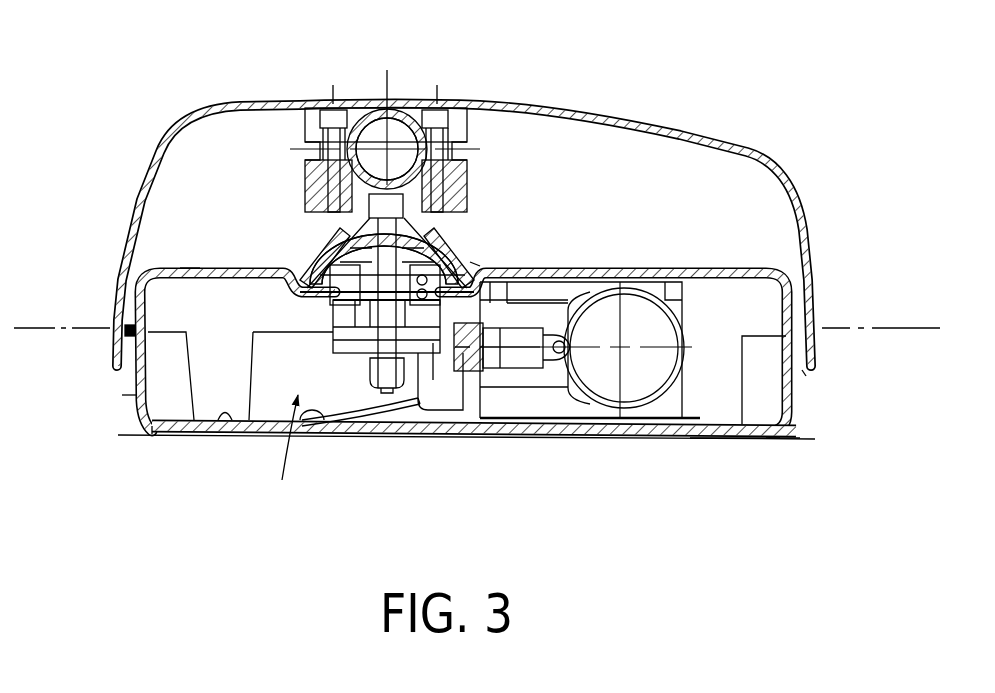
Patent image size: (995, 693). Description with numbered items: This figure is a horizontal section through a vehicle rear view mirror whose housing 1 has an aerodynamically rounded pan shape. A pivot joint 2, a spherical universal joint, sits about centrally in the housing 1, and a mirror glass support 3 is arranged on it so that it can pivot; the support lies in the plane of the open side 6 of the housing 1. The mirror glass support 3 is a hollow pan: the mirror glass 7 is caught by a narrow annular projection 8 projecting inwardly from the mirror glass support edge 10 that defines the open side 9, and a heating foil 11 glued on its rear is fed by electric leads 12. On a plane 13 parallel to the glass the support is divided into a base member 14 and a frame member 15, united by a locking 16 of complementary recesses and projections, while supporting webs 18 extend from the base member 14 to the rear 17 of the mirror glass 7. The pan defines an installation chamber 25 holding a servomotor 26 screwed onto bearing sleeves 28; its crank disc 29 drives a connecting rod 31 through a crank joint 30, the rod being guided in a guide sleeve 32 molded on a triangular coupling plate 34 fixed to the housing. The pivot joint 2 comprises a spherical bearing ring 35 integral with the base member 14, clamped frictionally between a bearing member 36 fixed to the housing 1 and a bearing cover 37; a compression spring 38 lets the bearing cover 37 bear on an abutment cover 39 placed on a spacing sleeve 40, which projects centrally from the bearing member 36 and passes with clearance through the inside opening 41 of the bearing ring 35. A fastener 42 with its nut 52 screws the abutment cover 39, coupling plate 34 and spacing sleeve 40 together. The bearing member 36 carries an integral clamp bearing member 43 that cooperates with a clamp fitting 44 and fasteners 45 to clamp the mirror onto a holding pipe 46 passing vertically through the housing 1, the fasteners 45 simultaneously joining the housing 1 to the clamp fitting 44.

The housing 1 is at (684, 132).
The pivot joint 2 is at (474, 264).
The mirror glass support 3 is at (712, 266).
The open side 6 is at (803, 380).
The mirror glass 7 is at (672, 438).
The annular projection 8 is at (165, 436).
The open side 9 is at (550, 419).
The mirror glass support edge 10 is at (784, 436).
The heating foil 11 is at (625, 438).
The electric leads 12 is at (406, 412).
The plane 13 is at (878, 330).
The base member 14 is at (190, 268).
The frame member 15 is at (145, 400).
The locking 16 is at (125, 333).
The rear 17 is at (224, 421).
The supporting webs 18 is at (232, 376).
The installation chamber 25 is at (276, 455).
The servomotor 26 is at (540, 377).
The bearing sleeves 28 is at (502, 296).
The crank disc 29 is at (662, 340).
The crank joint 30 is at (582, 328).
The connecting rod 31 is at (500, 368).
The guide sleeve 32 is at (466, 372).
The coupling plate 34 is at (346, 336).
The bearing ring 35 is at (462, 240).
The bearing member 36 is at (428, 215).
The bearing cover 37 is at (346, 264).
The compression spring 38 is at (340, 298).
The abutment cover 39 is at (440, 376).
The spacing sleeve 40 is at (330, 276).
The inside opening 41 is at (352, 246).
The fastener 42 is at (374, 364).
The clamp bearing member 43 is at (422, 184).
The clamp fitting 44 is at (408, 100).
The fasteners 45 is at (323, 100).
The holding pipe 46 is at (372, 100).
The nut 52 is at (352, 406).